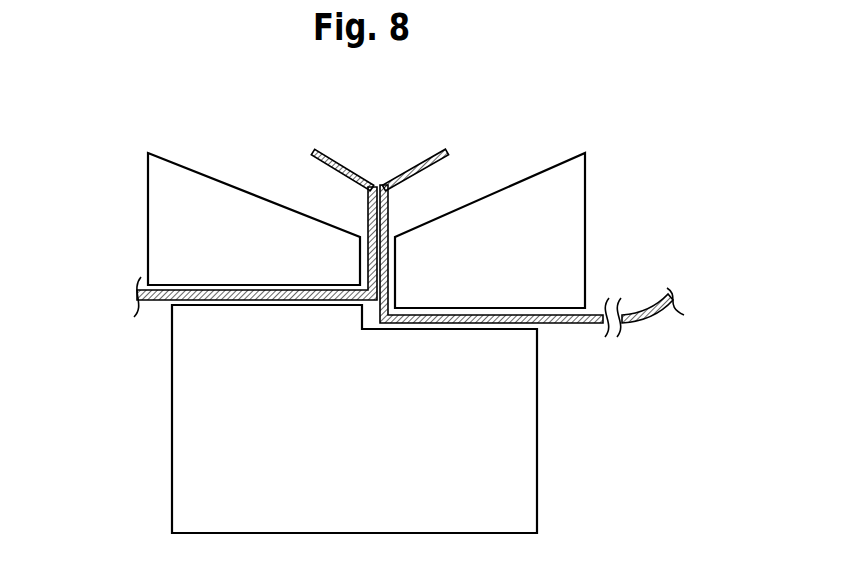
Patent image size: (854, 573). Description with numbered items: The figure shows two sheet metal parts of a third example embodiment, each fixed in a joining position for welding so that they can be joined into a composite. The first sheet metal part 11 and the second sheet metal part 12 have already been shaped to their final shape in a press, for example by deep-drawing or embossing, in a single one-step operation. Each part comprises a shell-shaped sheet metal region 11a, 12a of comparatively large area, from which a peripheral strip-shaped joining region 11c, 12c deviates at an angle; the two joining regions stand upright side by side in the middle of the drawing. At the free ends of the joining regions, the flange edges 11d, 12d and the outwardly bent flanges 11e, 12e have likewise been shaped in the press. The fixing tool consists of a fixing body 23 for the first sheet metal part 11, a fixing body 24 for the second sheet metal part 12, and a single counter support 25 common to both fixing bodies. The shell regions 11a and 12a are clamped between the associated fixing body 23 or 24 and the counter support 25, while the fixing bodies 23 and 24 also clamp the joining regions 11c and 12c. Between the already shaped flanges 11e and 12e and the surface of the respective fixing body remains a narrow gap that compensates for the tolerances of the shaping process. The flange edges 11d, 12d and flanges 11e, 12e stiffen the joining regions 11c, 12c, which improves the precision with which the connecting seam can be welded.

The first sheet metal part 11 is at (201, 226).
The shell-shaped sheet metal region 11a is at (163, 300).
The joining region 11c is at (367, 188).
The flange edge 11d is at (372, 188).
The flange 11e is at (313, 152).
The second sheet metal part 12 is at (566, 238).
The shell-shaped sheet metal region 12a is at (590, 323).
The joining region 12c is at (388, 188).
The flange edge 12d is at (384, 188).
The flange 12e is at (445, 152).
The fixing body 23 is at (165, 195).
The fixing body 24 is at (567, 210).
The counter support 25 is at (520, 460).